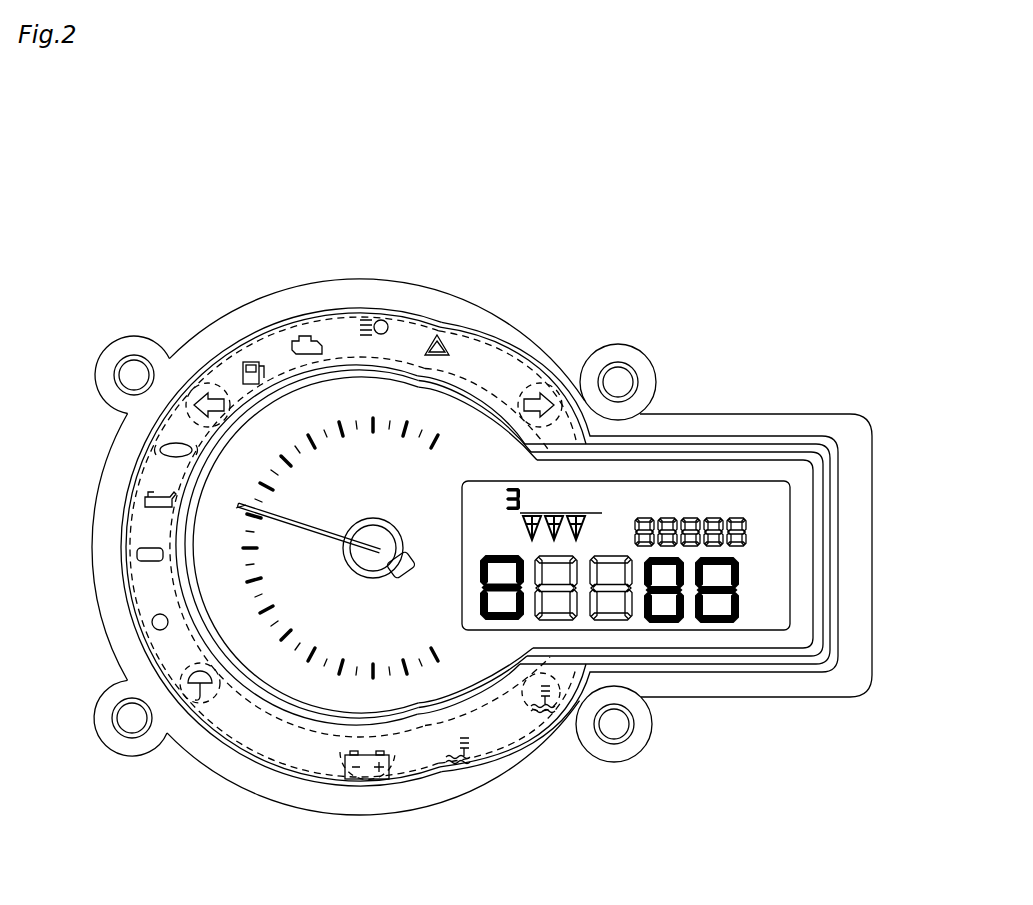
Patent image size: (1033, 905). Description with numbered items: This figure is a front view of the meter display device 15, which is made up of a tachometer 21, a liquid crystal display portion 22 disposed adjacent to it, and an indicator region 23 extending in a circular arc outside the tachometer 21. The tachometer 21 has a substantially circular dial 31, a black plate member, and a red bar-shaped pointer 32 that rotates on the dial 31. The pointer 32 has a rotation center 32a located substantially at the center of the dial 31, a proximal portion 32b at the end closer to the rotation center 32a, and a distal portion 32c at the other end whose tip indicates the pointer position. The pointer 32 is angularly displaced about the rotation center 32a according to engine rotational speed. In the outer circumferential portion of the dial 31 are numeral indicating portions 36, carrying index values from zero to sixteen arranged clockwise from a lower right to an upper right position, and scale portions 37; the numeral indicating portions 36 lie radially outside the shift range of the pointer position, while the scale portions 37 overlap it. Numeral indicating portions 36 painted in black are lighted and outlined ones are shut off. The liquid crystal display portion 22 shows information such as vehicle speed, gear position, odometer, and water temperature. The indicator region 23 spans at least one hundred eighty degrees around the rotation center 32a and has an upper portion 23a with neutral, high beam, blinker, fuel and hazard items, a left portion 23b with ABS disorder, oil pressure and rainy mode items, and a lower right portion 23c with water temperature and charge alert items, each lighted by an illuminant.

The meter display device 15 is at (210, 306).
The tachometer 21 is at (436, 192).
The liquid crystal display portion 22 is at (718, 480).
The indicator region 23 is at (173, 648).
The upper portion 23a is at (470, 340).
The left portion 23b is at (132, 472).
The lower right portion 23c is at (428, 787).
The dial 31 is at (413, 405).
The pointer 32 is at (326, 522).
The rotation center 32a is at (392, 522).
The proximal portion 32b is at (393, 585).
The distal portion 32c is at (236, 507).
The numeral indicating portions 36 is at (282, 673).
The scale portions 37 is at (310, 667).